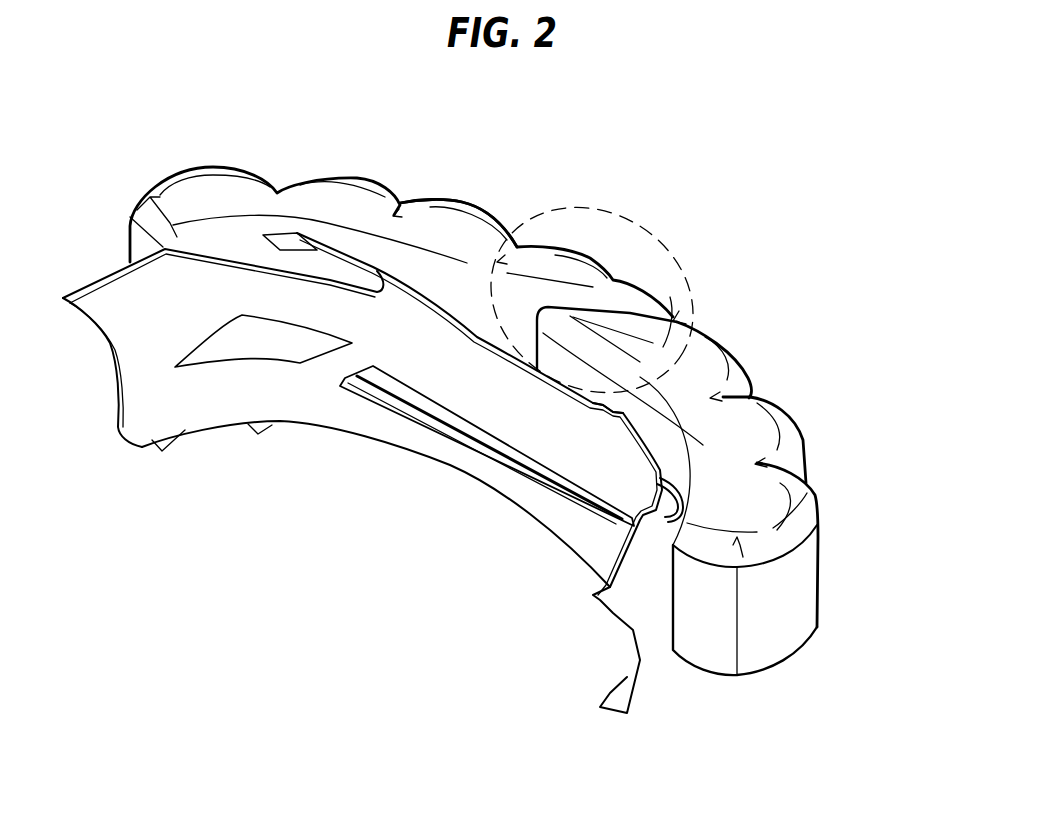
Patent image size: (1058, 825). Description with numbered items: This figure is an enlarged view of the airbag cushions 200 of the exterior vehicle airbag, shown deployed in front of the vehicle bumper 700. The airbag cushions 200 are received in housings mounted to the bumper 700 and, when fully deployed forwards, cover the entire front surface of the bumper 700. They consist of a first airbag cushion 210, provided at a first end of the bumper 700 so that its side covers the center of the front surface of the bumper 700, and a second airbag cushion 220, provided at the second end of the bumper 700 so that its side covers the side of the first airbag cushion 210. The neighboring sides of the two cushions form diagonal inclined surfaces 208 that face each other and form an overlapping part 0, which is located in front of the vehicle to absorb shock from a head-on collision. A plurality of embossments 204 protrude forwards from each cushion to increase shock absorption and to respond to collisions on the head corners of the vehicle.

The airbag cushion 200 is at (492, 105).
The second airbag cushion 220 is at (437, 225).
The first airbag cushion 210 is at (603, 299).
The embossment 204 is at (783, 608).
The diagonal inclined surface 208 is at (547, 292).
The vehicle bumper 700 is at (323, 407).
The bracket notch 0 is at (600, 402).